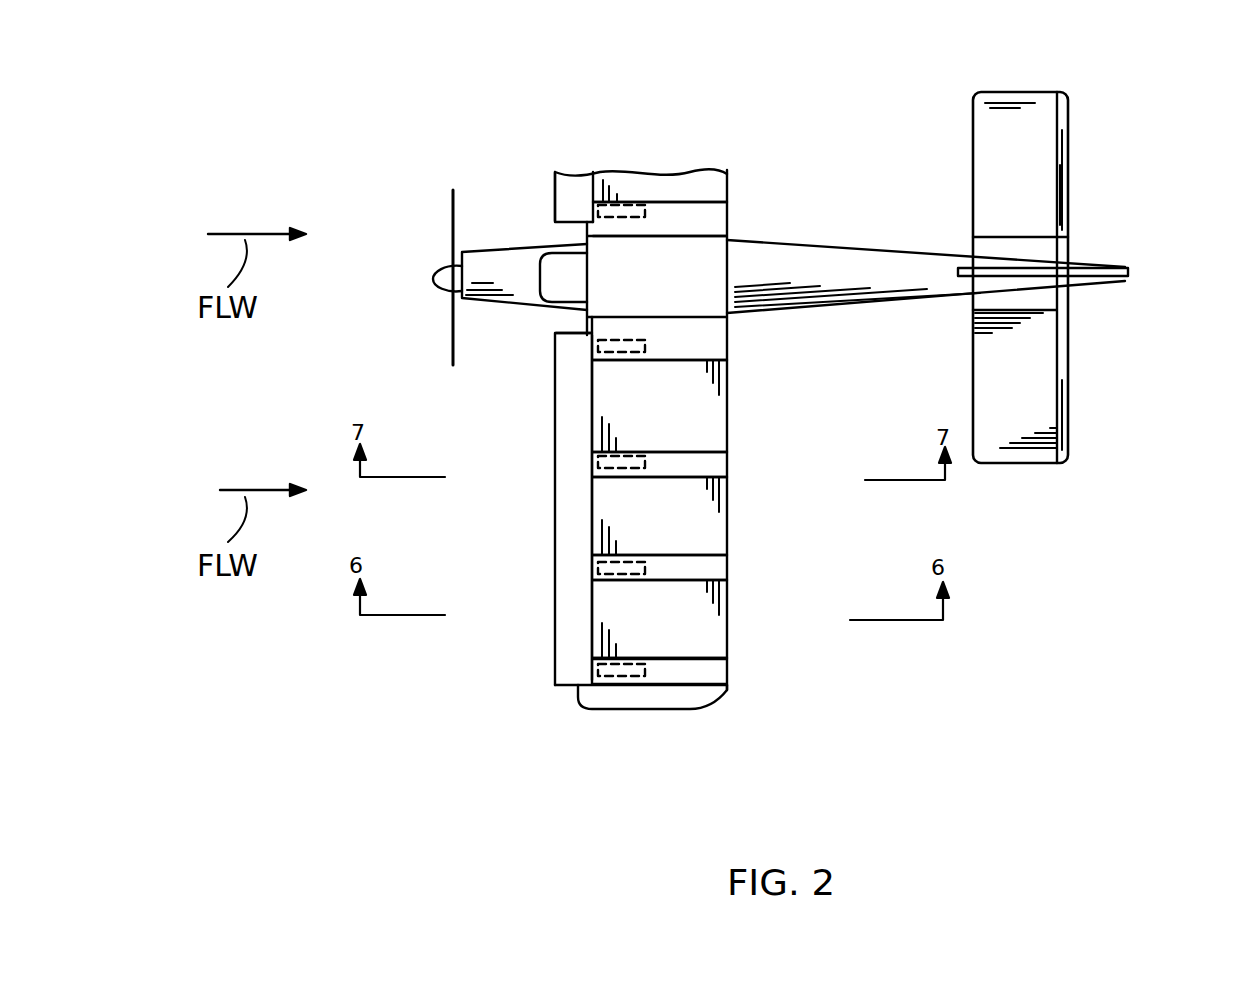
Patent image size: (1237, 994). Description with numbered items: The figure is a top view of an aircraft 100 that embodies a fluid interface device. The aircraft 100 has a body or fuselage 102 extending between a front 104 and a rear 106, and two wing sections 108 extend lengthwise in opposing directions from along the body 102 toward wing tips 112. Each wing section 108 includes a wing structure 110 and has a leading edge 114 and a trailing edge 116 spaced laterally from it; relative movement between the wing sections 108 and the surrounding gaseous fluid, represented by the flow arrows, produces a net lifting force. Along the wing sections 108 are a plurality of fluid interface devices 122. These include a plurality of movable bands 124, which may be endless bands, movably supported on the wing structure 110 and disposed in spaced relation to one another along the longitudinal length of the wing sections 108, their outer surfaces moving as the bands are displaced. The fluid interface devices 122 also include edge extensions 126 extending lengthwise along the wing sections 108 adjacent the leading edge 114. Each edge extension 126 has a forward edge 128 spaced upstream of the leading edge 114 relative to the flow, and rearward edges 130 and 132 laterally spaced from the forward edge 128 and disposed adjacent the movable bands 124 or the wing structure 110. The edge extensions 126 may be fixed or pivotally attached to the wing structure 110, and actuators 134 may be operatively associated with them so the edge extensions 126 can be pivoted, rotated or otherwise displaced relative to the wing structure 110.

The aircraft 100 is at (786, 94).
The body or fuselage 102 is at (836, 238).
The front 104 is at (483, 182).
The rear 106 is at (1143, 192).
The wing section 108 is at (740, 176).
The wing structure 110 is at (681, 679).
The wing tip 112 is at (608, 712).
The leading edge 114 is at (587, 232).
The trailing edge 116 is at (727, 216).
The fluid interface device 122 is at (619, 157).
The movable band 124 is at (695, 185).
The edge extension 126 is at (578, 180).
The forward or leading edge 128 is at (552, 184).
The rearward or trailing edge 130 is at (588, 400).
The rearward or trailing edge 132 is at (632, 195).
The actuator 134 is at (596, 468).